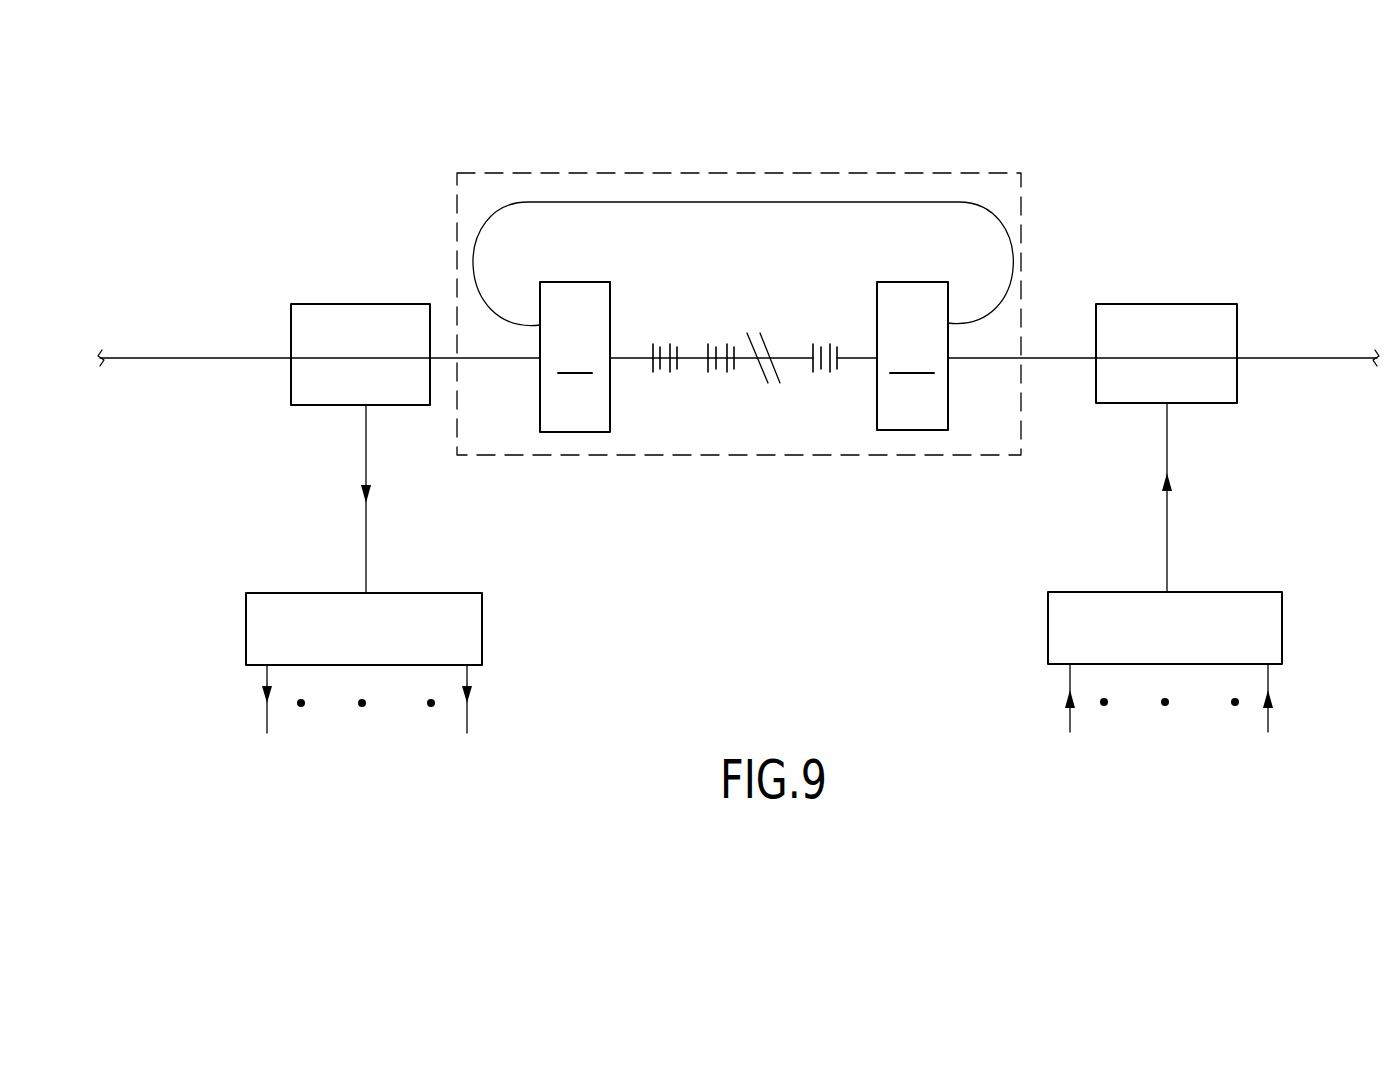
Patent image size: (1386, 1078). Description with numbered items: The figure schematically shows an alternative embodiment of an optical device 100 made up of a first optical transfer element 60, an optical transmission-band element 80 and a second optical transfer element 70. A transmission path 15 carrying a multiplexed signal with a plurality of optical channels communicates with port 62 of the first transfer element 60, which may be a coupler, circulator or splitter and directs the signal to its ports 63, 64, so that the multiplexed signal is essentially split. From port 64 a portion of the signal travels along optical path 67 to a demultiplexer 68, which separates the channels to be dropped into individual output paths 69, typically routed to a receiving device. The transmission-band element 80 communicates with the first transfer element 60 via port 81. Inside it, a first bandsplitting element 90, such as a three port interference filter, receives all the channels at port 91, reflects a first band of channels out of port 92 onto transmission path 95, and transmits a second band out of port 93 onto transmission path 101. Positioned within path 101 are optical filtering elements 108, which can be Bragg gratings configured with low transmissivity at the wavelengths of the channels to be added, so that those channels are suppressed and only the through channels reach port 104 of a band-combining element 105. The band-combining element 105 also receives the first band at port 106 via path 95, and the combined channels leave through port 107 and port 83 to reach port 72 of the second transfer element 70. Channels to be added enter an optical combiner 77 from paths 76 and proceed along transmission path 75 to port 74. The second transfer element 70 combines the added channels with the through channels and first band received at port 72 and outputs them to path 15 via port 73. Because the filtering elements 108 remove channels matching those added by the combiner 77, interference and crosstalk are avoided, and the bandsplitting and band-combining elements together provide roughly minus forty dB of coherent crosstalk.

The transmission path 15 is at (165, 358).
The first optical transfer element 60 is at (327, 325).
The port 62 is at (290, 360).
The port 63 is at (430, 357).
The port 64 is at (363, 407).
The optical path 67 is at (366, 550).
The demultiplexer 68 is at (467, 613).
The output paths 69 is at (467, 720).
The second optical transfer element 70 is at (1165, 317).
The port 72 is at (1096, 353).
The port 73 is at (1237, 358).
The port 74 is at (1168, 407).
The transmission path 75 is at (1167, 533).
The paths 76 is at (1268, 720).
The optical combiner 77 is at (1270, 603).
The optical transmission-band element 80 is at (822, 173).
The port 81 is at (453, 360).
The port 83 is at (1022, 357).
The first bandsplitting element 90 is at (575, 357).
The port 91 is at (540, 358).
The port 92 is at (540, 325).
The port 93 is at (610, 358).
The transmission path 95 is at (650, 202).
The optical device 100 is at (1148, 158).
The transmission path 101 is at (632, 358).
The port 104 is at (877, 358).
The band-combining element 105 is at (912, 356).
The port 106 is at (950, 320).
The port 107 is at (948, 358).
The optical filtering elements 108 is at (885, 243).